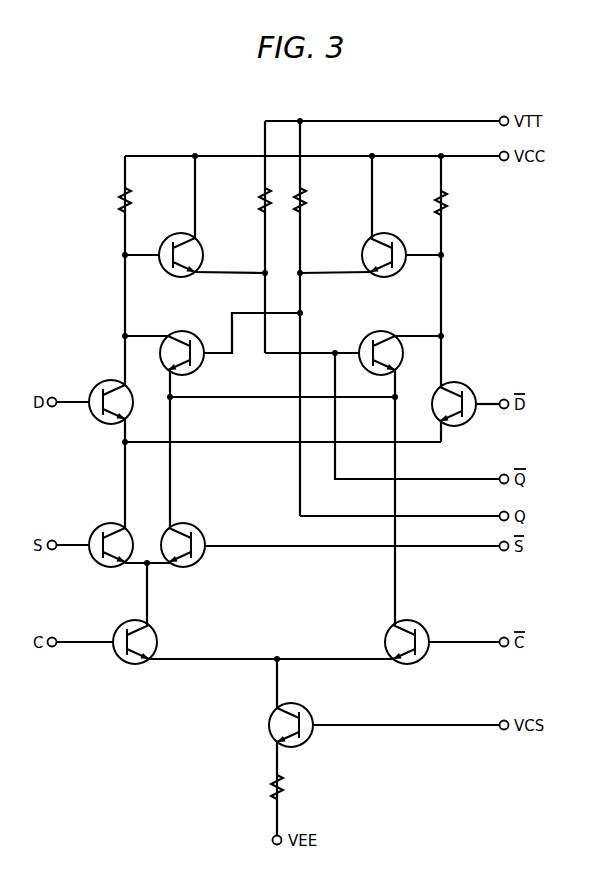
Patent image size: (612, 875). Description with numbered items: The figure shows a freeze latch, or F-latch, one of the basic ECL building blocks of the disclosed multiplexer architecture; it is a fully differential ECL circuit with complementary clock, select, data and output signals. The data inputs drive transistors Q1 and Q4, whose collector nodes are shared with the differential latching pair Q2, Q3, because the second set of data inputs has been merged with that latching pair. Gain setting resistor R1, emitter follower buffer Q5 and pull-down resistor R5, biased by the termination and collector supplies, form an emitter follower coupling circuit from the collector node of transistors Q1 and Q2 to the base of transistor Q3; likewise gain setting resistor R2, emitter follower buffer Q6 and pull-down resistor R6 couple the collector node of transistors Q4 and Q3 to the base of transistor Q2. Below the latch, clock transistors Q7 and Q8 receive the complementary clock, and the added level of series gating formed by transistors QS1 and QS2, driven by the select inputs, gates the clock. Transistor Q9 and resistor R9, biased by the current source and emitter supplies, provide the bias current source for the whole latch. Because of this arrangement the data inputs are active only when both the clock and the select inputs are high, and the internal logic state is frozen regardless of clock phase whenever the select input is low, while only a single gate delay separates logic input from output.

The gain setting resistor R1 is at (114, 200).
The gain setting resistor R2 is at (453, 203).
The pull-down resistor R5 is at (254, 200).
The pull-down resistor R6 is at (312, 200).
The bias resistor R9 is at (289, 787).
The data input transistor Q1 is at (108, 394).
The latching pair transistor Q2 is at (185, 343).
The latching pair transistor Q3 is at (375, 343).
The data input transistor Q4 is at (459, 396).
The emitter follower buffer Q5 is at (194, 255).
The emitter follower buffer Q6 is at (372, 255).
The clock transistor Q7 is at (146, 640).
The clock transistor Q8 is at (396, 640).
The bias current source transistor Q9 is at (301, 719).
The series gating transistor QS1 is at (100, 536).
The series gating transistor QS2 is at (192, 536).